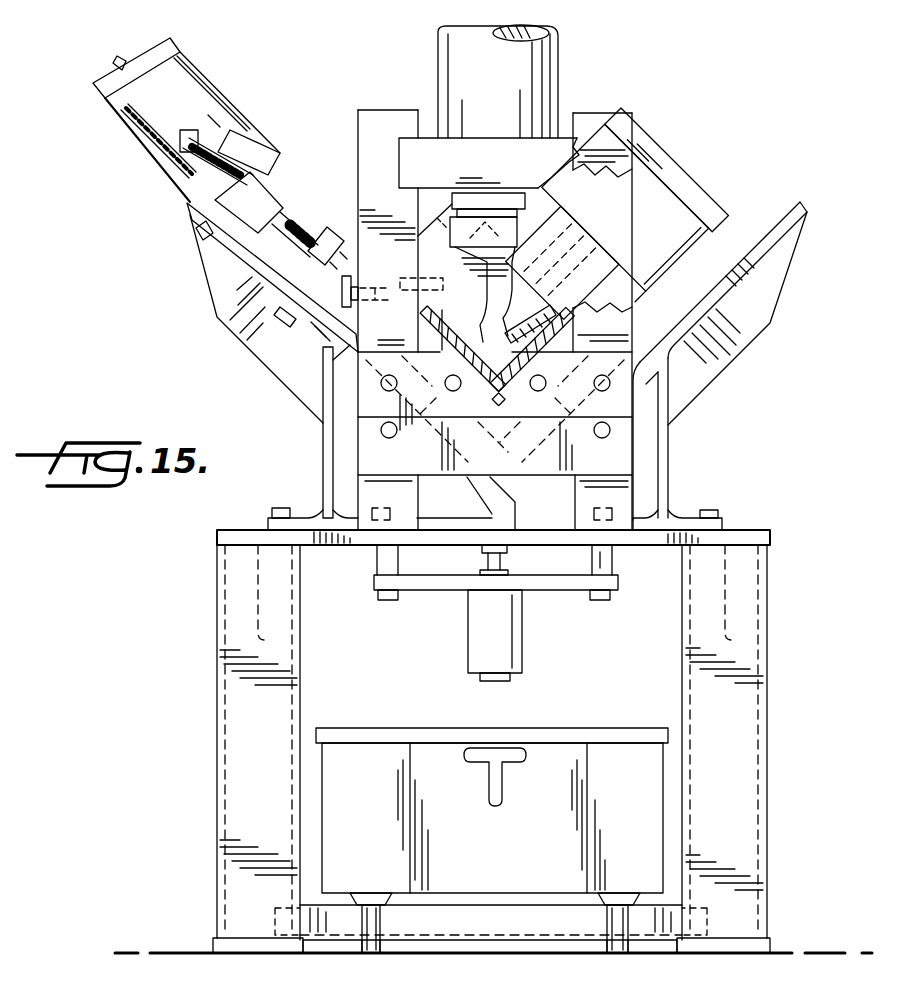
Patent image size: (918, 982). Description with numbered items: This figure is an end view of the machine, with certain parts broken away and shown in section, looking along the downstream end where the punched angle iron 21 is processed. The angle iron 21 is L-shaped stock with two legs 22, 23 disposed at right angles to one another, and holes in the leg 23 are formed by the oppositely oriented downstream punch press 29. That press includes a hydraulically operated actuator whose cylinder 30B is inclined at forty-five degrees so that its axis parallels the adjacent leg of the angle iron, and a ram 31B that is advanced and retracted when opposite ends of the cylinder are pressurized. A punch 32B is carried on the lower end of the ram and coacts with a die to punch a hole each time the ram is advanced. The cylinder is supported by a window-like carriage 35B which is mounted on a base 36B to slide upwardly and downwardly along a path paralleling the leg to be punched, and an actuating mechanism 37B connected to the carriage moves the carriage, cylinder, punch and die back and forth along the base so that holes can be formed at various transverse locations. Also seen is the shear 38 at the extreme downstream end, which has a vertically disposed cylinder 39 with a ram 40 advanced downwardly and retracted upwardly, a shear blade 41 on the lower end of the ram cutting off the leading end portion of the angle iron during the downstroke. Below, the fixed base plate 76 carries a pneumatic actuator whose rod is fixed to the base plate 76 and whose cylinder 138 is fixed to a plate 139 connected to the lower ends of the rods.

The angle iron 21 is at (510, 325).
The leg 22 is at (540, 357).
The leg 23 is at (452, 351).
The punch press 29 is at (622, 257).
The cylinder 30B is at (693, 190).
The ram 31B is at (603, 244).
The punch 32B is at (507, 389).
The carriage 35B is at (648, 320).
The base 36B is at (220, 316).
The actuating mechanism 37B is at (286, 128).
The shear 38 is at (518, 277).
The cylinder 39 is at (460, 70).
The ram 40 is at (488, 192).
The shear blade 41 is at (458, 273).
The base plate 76 is at (580, 538).
The cylinder 138 is at (508, 640).
The plate 139 is at (443, 588).